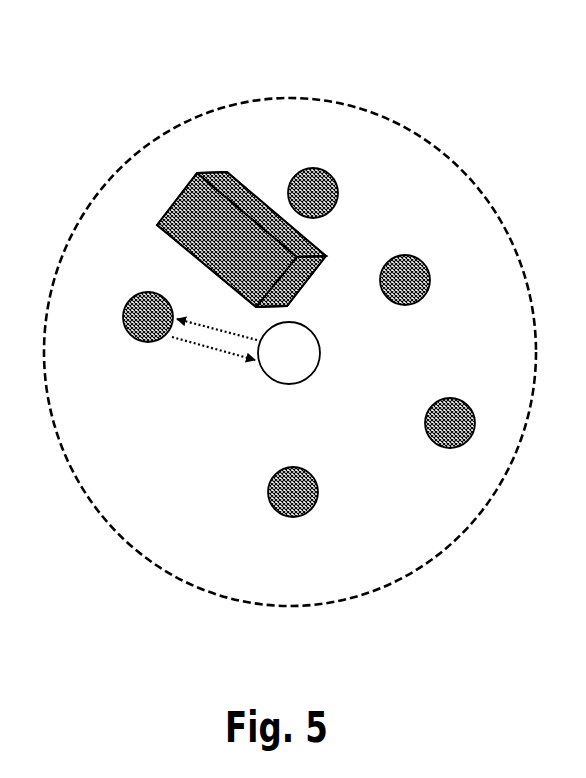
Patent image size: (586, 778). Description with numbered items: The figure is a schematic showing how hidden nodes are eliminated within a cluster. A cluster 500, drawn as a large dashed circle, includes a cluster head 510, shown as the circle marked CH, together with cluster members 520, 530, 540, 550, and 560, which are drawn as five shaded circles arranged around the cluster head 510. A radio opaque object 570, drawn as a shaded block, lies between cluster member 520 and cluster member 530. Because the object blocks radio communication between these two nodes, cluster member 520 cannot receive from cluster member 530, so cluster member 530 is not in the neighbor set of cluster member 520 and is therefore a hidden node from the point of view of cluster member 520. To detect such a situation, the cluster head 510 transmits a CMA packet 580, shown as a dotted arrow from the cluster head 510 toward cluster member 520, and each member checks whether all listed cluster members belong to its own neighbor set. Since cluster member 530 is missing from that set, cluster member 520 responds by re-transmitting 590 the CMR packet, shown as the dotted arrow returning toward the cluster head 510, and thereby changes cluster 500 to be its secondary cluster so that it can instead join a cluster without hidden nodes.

The cluster 500 is at (327, 96).
The cluster head 510 is at (298, 382).
The cluster member 520 is at (125, 317).
The cluster member 530 is at (338, 183).
The cluster member 540 is at (403, 306).
The cluster member 550 is at (427, 437).
The cluster member 560 is at (292, 516).
The radio opaque object 570 is at (195, 180).
The CMA packet 580 is at (210, 331).
The re-transmitting the CMR packet 590 is at (220, 351).